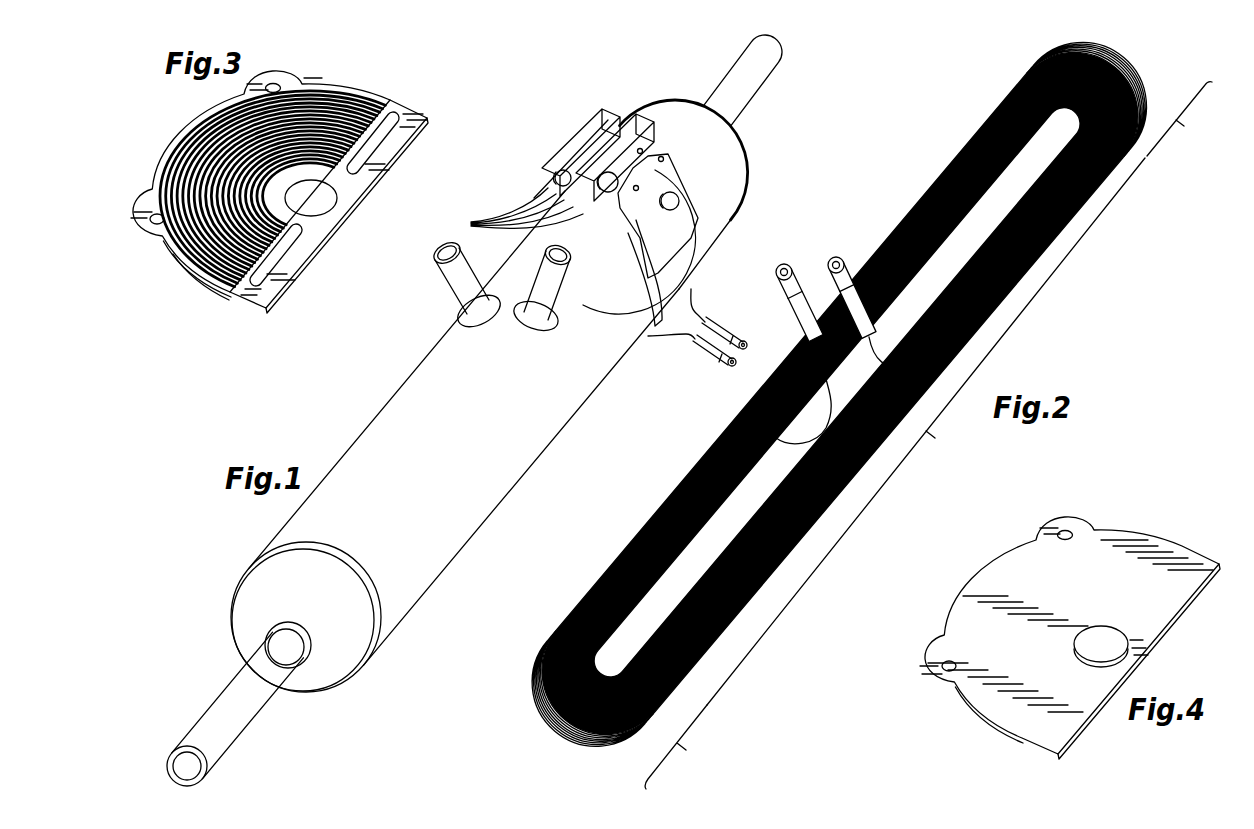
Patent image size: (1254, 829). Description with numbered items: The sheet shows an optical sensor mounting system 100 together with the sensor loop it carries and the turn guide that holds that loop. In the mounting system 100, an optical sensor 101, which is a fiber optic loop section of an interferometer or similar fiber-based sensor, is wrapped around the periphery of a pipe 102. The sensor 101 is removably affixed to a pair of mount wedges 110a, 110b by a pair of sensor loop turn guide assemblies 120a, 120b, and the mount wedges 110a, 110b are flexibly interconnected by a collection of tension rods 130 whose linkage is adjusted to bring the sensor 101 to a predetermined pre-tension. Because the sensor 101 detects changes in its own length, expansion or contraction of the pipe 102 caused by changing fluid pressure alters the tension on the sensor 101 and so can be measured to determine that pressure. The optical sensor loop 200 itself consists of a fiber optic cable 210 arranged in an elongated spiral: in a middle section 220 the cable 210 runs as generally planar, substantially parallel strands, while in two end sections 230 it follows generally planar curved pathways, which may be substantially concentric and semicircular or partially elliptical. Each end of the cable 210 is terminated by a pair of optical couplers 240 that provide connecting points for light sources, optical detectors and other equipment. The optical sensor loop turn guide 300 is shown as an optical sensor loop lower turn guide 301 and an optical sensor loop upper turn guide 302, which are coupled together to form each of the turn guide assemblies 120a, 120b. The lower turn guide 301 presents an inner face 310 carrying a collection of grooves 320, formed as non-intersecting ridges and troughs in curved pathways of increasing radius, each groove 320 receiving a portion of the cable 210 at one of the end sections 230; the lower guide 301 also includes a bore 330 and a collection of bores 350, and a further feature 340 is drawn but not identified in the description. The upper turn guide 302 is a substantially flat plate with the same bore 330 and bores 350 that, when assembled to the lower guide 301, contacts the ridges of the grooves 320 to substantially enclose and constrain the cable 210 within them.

In FIG. 1, the optical sensor mounting system 100 is at (638, 185).
In FIG. 1, the optical sensor 101 is at (687, 257).
In FIG. 1, the pipe 102 is at (503, 476).
In FIG. 1, the mount wedge 110a is at (630, 100).
In FIG. 1, the mount wedge 110b is at (605, 104).
In FIG. 1, the sensor loop turn guide assembly 120a is at (673, 193).
In FIG. 1, the sensor loop turn guide assembly 120b is at (547, 170).
In FIG. 1, the tension rods 130 is at (470, 216).
In FIG. 2, the optical sensor loop 200 is at (875, 415).
In FIG. 2, the fiber optic cable 210 is at (880, 358).
In FIG. 2, the middle section 220 is at (926, 431).
In FIG. 2, the end sections 230 is at (887, 133).
In FIG. 2, the optical couplers 240 is at (828, 255).
In FIG. 3, the optical sensor loop turn guide 300 is at (268, 194).
In FIG. 4, the optical sensor loop turn guide 300 is at (1047, 635).
In FIG. 3, the optical sensor loop lower turn guide 301 is at (268, 194).
In FIG. 4, the optical sensor loop upper turn guide 302 is at (1047, 635).
In FIG. 3, the inner face 310 is at (187, 253).
In FIG. 3, the grooves 320 is at (393, 147).
In FIG. 3, the bore 330 is at (337, 187).
In FIG. 4, the bore 330 is at (1120, 630).
In FIG. 3, the substrate 340 is at (198, 271).
In FIG. 3, the bores 350 is at (273, 77).
In FIG. 4, the bores 350 is at (1060, 525).